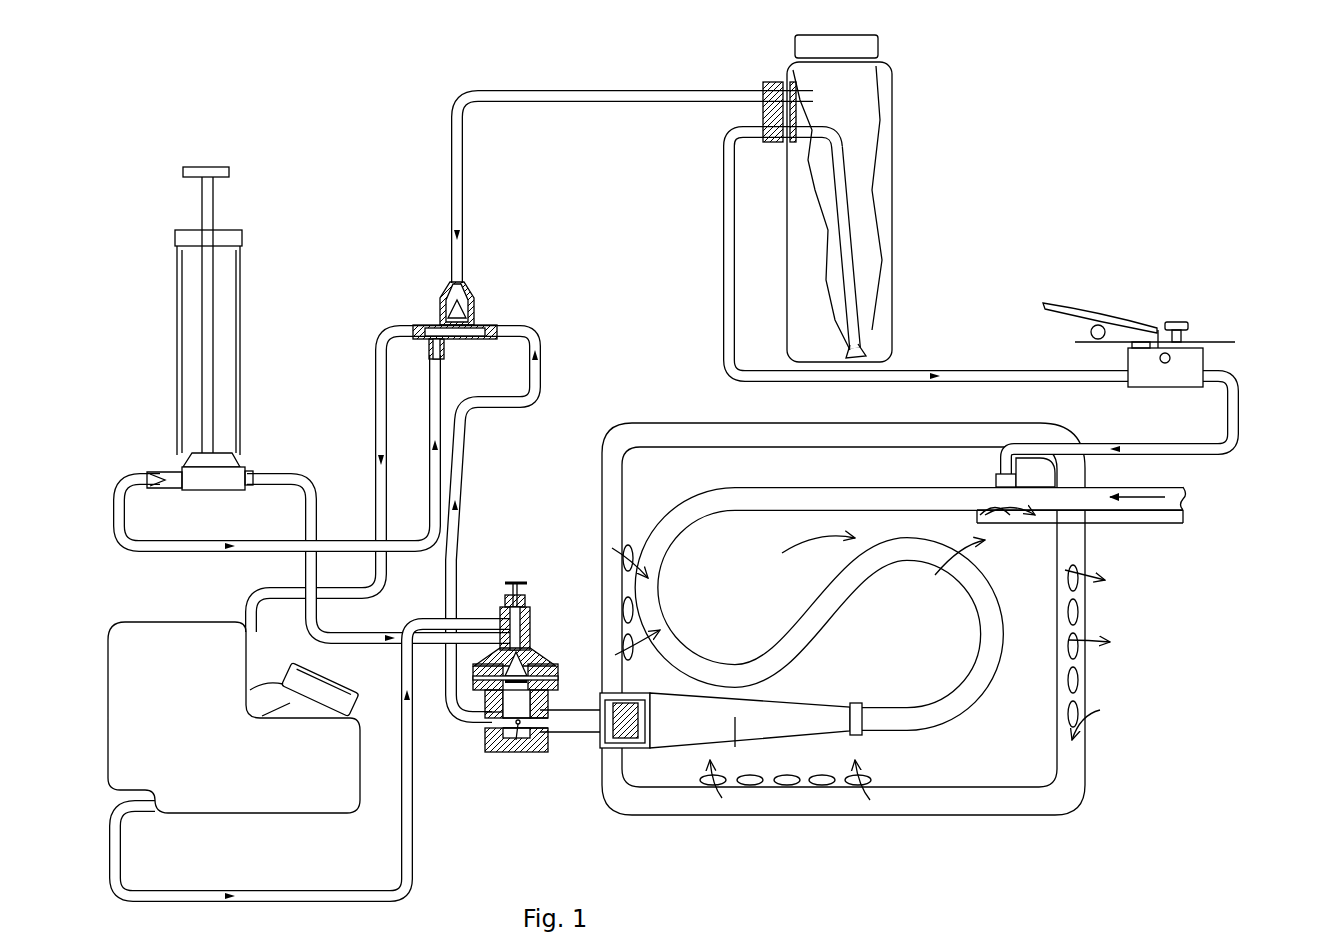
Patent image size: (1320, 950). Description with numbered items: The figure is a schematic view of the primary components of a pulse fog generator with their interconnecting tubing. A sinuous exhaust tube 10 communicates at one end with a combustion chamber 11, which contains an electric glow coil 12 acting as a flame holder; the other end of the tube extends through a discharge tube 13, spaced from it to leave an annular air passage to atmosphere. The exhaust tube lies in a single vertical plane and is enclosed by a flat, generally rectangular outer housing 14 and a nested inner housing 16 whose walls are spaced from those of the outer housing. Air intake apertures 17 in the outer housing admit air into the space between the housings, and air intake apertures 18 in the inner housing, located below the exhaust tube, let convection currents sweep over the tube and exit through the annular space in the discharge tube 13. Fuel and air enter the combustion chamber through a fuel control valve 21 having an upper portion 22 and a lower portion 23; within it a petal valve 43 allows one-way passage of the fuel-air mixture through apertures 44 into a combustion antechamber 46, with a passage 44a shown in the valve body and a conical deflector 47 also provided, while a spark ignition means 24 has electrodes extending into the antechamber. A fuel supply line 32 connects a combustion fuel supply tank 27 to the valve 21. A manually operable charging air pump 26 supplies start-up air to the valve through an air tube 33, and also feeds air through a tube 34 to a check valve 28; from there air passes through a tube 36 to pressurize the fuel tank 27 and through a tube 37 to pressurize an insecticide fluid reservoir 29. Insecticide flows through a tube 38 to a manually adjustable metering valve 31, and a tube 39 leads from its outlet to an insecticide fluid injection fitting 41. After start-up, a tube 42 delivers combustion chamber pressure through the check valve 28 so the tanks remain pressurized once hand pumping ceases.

The sinuous exhaust tube 10 is at (926, 603).
The combustion chamber 11 is at (648, 750).
The electric glow coil 12 is at (652, 720).
The discharge tube 13 is at (1160, 520).
The outer housing 14 is at (843, 652).
The inner housing 16 is at (1010, 777).
The air intake apertures 17 is at (1080, 580).
The air intake apertures 18 is at (631, 656).
The fuel control valve 21 is at (531, 576).
The upper portion 22 is at (508, 670).
The lower portion 23 is at (531, 756).
The electrical spark ignition means 24 is at (488, 746).
The manually operable charging air pump 26 is at (262, 246).
The combustion fuel supply tank 27 is at (152, 685).
The check valve 28 is at (489, 281).
The insecticide fluid reservoir 29 is at (880, 155).
The insecticide fluid metering valve 31 is at (1207, 318).
The fuel supply line 32 is at (278, 893).
The air tube 33 is at (344, 640).
The tube 34 is at (337, 542).
The tube 36 is at (376, 410).
The tube 37 is at (462, 207).
The tube 38 is at (724, 297).
The tube 39 is at (1236, 408).
The insecticide fluid injection fitting 41 is at (998, 470).
The tube 42 is at (466, 466).
The petal valve 43 is at (558, 680).
The apertures 44 is at (552, 667).
The passage 44a is at (491, 713).
The combustion antechamber 46 is at (506, 710).
The conical deflector 47 is at (541, 652).